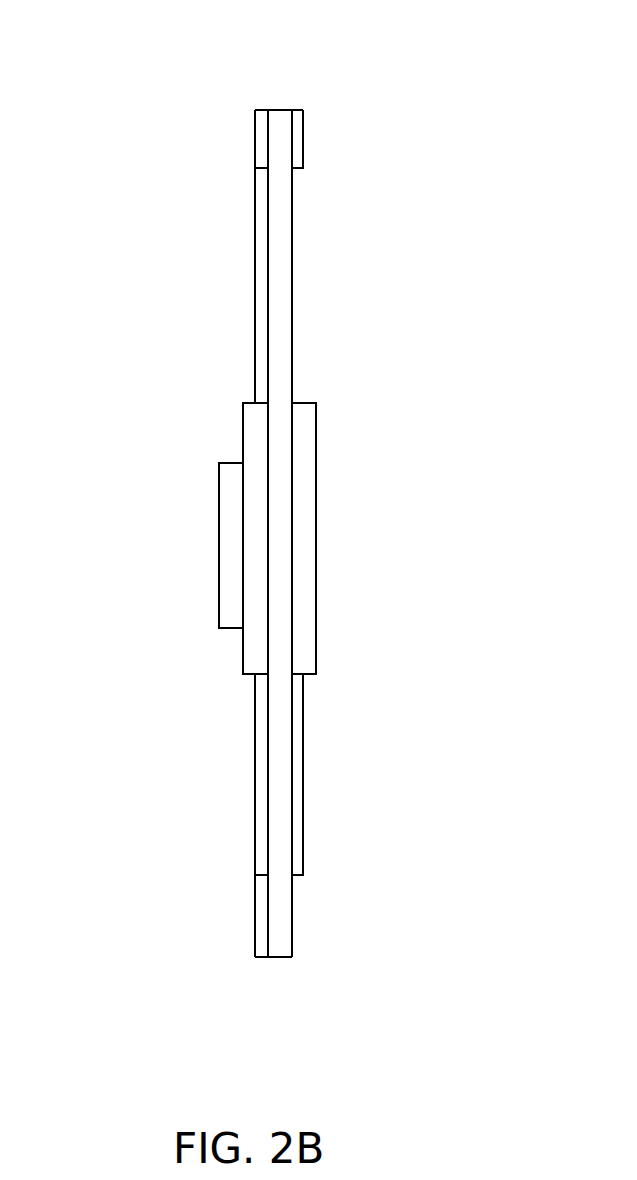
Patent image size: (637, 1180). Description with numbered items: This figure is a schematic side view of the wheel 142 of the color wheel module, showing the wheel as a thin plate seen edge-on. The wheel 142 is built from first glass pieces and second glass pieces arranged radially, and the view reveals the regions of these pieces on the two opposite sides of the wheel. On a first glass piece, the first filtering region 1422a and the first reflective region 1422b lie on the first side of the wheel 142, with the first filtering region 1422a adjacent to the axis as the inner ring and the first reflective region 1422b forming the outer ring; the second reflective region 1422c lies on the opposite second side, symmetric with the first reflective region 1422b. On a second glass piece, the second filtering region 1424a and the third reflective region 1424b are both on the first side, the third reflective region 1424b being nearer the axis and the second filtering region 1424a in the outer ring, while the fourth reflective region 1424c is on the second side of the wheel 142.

The wheel 142 is at (200, 42).
The first filtering region 1422a is at (240, 291).
The first reflective region 1422b is at (240, 147).
The second reflective region 1422c is at (322, 148).
The second filtering region 1424a is at (241, 925).
The third reflective region 1424b is at (241, 747).
The fourth reflective region 1424c is at (328, 806).